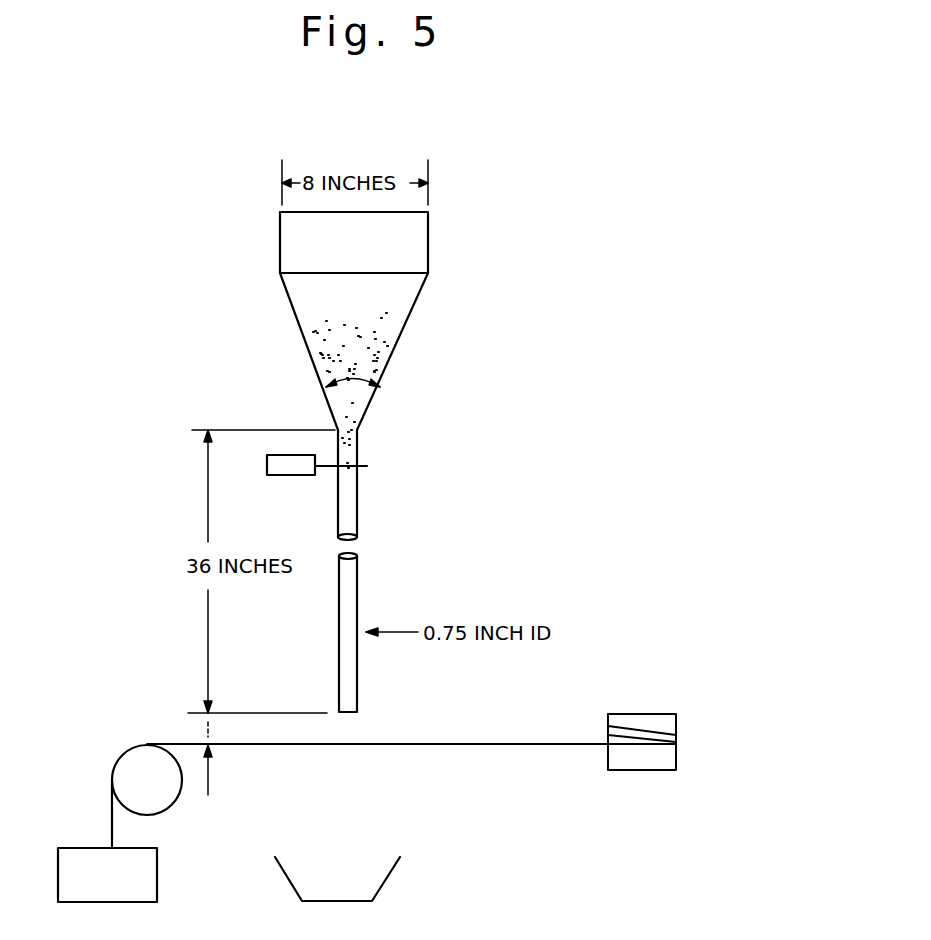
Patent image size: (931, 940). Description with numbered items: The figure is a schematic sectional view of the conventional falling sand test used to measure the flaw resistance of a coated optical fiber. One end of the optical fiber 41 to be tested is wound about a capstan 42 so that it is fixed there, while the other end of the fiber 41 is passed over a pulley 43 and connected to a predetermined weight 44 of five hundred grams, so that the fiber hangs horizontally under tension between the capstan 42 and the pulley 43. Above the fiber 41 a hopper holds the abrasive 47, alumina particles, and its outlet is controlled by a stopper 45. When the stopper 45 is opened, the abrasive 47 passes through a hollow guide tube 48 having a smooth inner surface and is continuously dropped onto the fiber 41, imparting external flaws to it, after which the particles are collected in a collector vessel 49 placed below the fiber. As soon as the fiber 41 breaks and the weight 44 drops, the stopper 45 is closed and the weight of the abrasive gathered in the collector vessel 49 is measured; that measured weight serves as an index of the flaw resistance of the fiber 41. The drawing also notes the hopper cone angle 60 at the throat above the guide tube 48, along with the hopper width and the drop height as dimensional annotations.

The optical fiber 41 is at (492, 745).
The capstan 42 is at (645, 768).
The pulley 43 is at (136, 760).
The weight 44 is at (150, 886).
The stopper 45 is at (400, 312).
The abrasive 47 is at (322, 357).
The hollow guide tube 48 is at (352, 587).
The collector vessel 49 is at (376, 897).
The hopper cone angle 60 is at (353, 395).